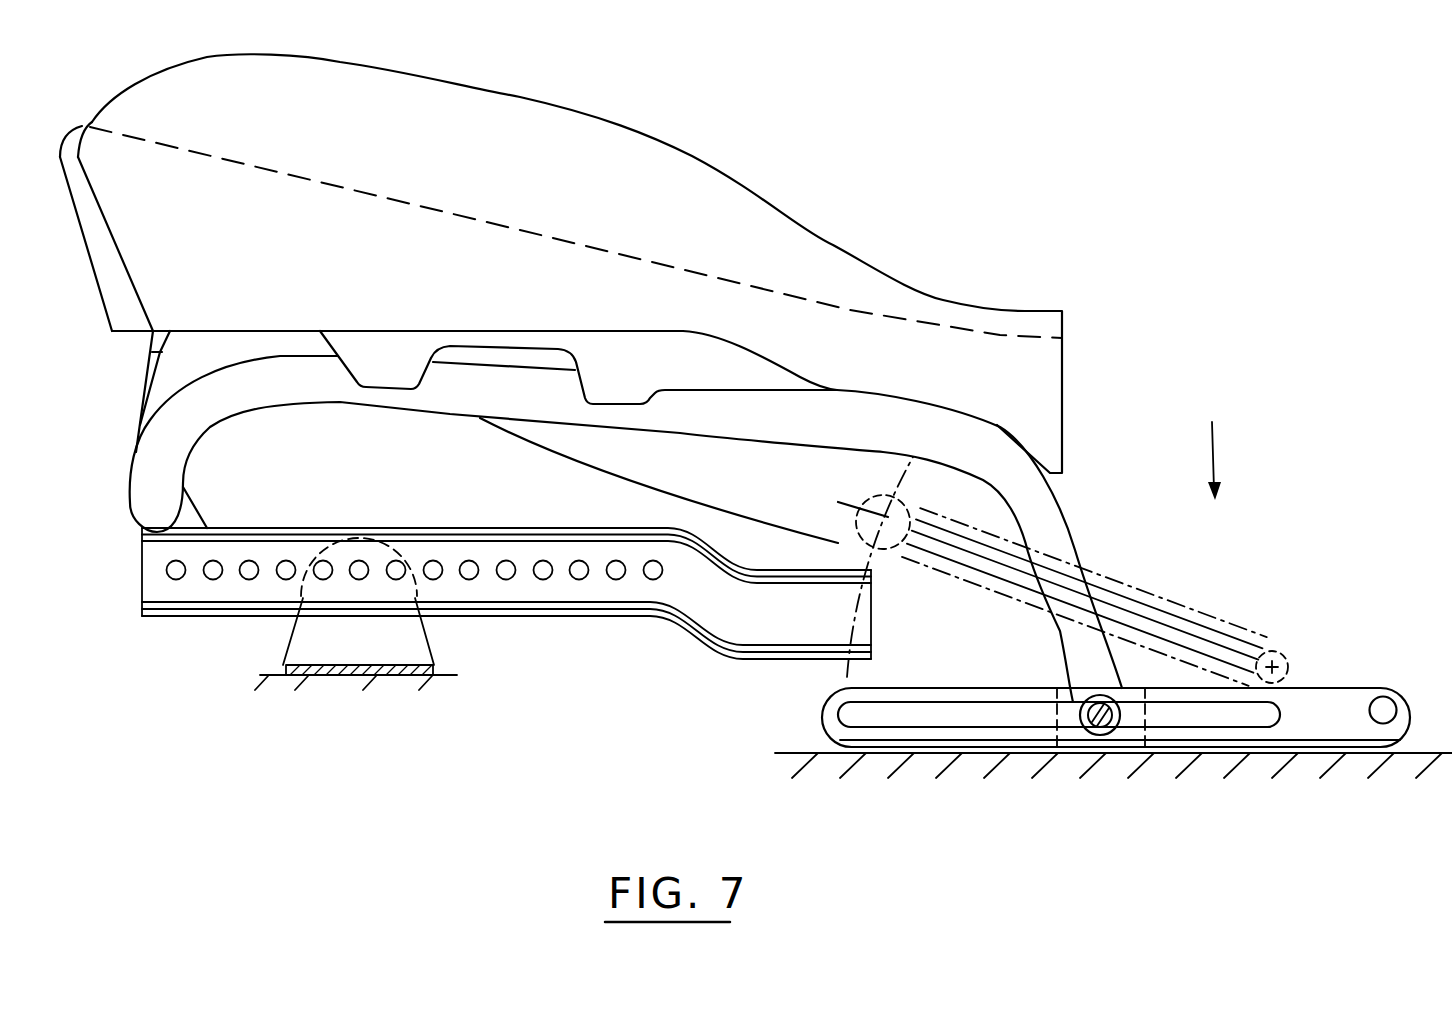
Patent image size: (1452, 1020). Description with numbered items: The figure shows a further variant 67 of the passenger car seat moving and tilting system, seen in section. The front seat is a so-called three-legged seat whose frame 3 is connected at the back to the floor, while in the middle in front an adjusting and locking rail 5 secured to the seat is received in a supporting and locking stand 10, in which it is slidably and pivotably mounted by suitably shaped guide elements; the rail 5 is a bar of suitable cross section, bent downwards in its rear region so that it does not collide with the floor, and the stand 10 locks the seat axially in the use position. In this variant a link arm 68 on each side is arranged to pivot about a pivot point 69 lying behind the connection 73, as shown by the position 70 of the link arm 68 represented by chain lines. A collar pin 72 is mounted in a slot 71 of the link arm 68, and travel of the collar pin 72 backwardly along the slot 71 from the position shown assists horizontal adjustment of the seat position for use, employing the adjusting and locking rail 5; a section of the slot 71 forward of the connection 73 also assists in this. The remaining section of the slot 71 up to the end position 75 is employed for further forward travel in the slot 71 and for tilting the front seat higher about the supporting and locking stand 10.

The frame 3 is at (945, 440).
The adjusting and locking rail 5 is at (240, 591).
The supporting and locking stand 10 is at (337, 644).
The further variant 67 is at (1115, 449).
The link arm 68 is at (1165, 733).
The pivot point 69 is at (1379, 719).
The position of the link arm 70 is at (1237, 636).
The slot 71 is at (1196, 715).
The collar pin 72 is at (1084, 723).
The connection 73 is at (1134, 672).
The end position 75 is at (883, 517).